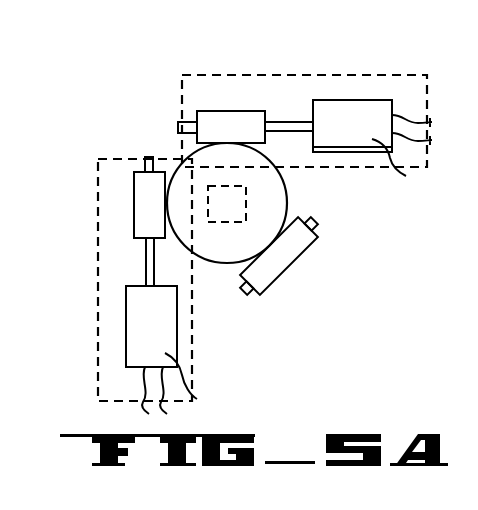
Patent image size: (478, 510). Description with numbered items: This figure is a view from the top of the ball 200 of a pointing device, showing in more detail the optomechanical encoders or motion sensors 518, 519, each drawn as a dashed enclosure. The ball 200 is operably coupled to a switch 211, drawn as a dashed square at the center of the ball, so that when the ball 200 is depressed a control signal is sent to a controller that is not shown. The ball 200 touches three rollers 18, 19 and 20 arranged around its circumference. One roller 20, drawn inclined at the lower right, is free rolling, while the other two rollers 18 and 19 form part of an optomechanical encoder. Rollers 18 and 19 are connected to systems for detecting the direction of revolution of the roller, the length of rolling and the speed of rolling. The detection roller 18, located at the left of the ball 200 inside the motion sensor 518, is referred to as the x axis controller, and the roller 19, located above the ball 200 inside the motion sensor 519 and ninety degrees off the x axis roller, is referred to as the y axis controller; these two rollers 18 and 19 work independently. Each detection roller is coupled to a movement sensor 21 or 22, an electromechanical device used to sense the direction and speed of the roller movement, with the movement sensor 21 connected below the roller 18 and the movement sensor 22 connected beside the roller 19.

The motion sensor 519 is at (221, 73).
The motion sensor 518 is at (98, 315).
The ball 200 is at (255, 167).
The switch 211 is at (245, 212).
The roller 19 is at (207, 118).
The movement sensor 22 is at (350, 130).
The roller 18 is at (145, 203).
The movement sensor 21 is at (168, 320).
The roller 20 is at (282, 263).